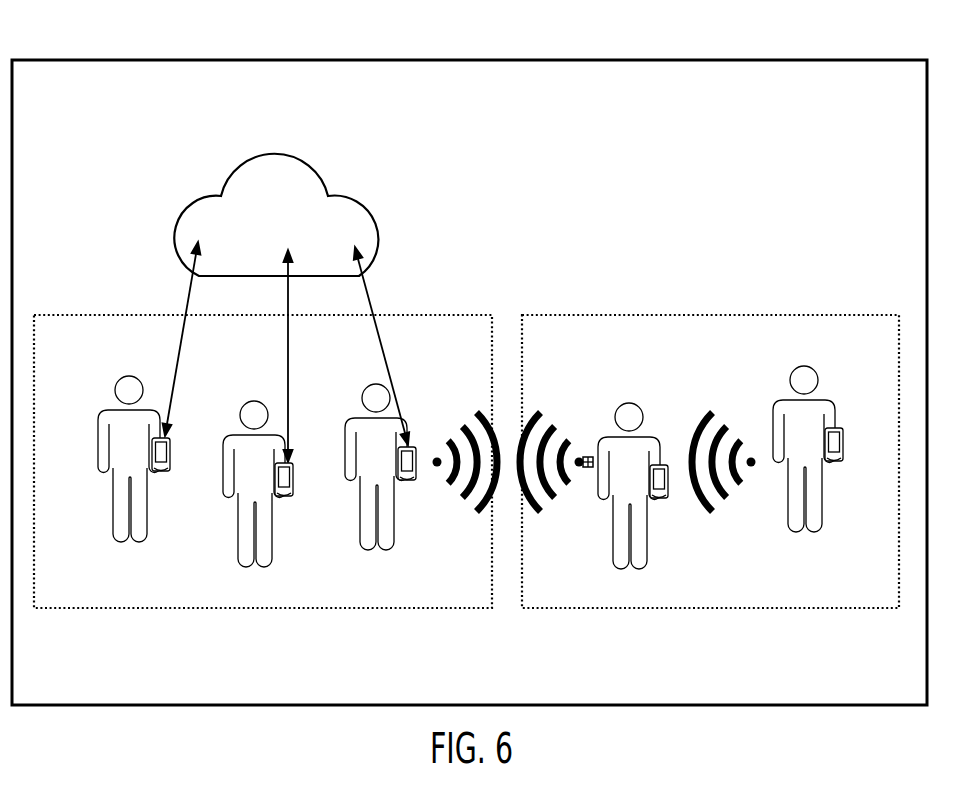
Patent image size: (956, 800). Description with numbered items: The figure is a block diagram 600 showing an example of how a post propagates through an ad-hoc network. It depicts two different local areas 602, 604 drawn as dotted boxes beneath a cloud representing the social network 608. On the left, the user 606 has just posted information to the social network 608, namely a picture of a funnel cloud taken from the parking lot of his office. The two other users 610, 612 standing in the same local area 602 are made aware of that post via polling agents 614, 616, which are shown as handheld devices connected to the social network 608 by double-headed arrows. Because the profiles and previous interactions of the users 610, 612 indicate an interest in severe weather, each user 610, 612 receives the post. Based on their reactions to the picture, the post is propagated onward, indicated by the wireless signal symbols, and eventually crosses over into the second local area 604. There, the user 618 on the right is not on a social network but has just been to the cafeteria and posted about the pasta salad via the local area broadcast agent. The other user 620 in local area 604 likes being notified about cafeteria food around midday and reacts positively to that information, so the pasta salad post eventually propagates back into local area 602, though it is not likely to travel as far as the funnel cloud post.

The block diagram 600 is at (70, 60).
The local area 602 is at (328, 635).
The local area 604 is at (777, 636).
The user 606 is at (128, 377).
The social network 608 is at (272, 153).
The user 610 is at (242, 568).
The user 612 is at (366, 552).
The polling agent 614 is at (302, 468).
The polling agent 616 is at (418, 457).
The user 618 is at (806, 368).
The user 620 is at (634, 404).